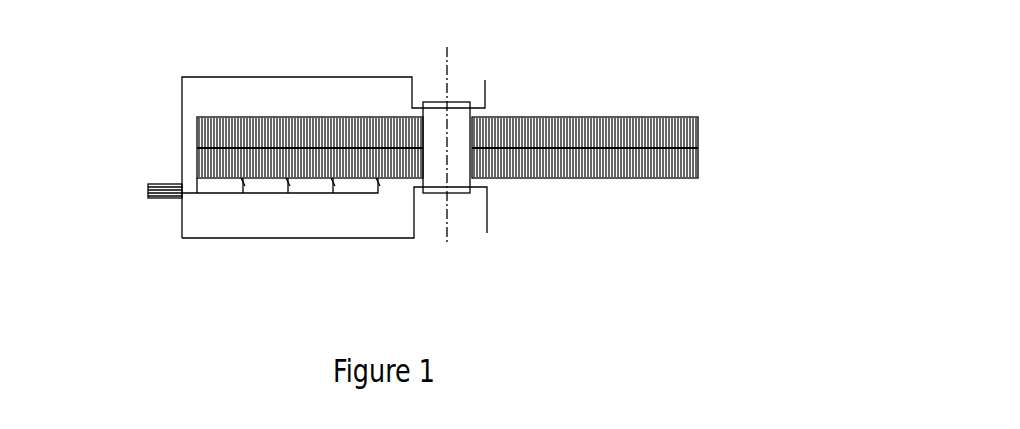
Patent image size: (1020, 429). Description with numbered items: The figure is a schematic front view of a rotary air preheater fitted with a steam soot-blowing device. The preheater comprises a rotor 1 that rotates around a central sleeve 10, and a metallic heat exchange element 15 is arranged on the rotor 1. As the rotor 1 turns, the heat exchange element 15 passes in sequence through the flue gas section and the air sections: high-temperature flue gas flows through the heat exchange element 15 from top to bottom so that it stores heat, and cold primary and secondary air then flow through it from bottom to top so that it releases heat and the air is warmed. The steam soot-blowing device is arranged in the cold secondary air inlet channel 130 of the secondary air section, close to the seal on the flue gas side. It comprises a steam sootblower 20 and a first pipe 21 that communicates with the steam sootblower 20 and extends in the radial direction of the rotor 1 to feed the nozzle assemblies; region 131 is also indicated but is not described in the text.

The rotor 1 is at (192, 140).
The central sleeve 10 is at (432, 100).
The metallic heat exchange element 15 is at (673, 170).
The steam sootblower 20 is at (150, 185).
The first pipe 21 is at (185, 197).
The cold secondary air inlet channel 130 is at (220, 236).
The upper housing portion 131 is at (272, 98).